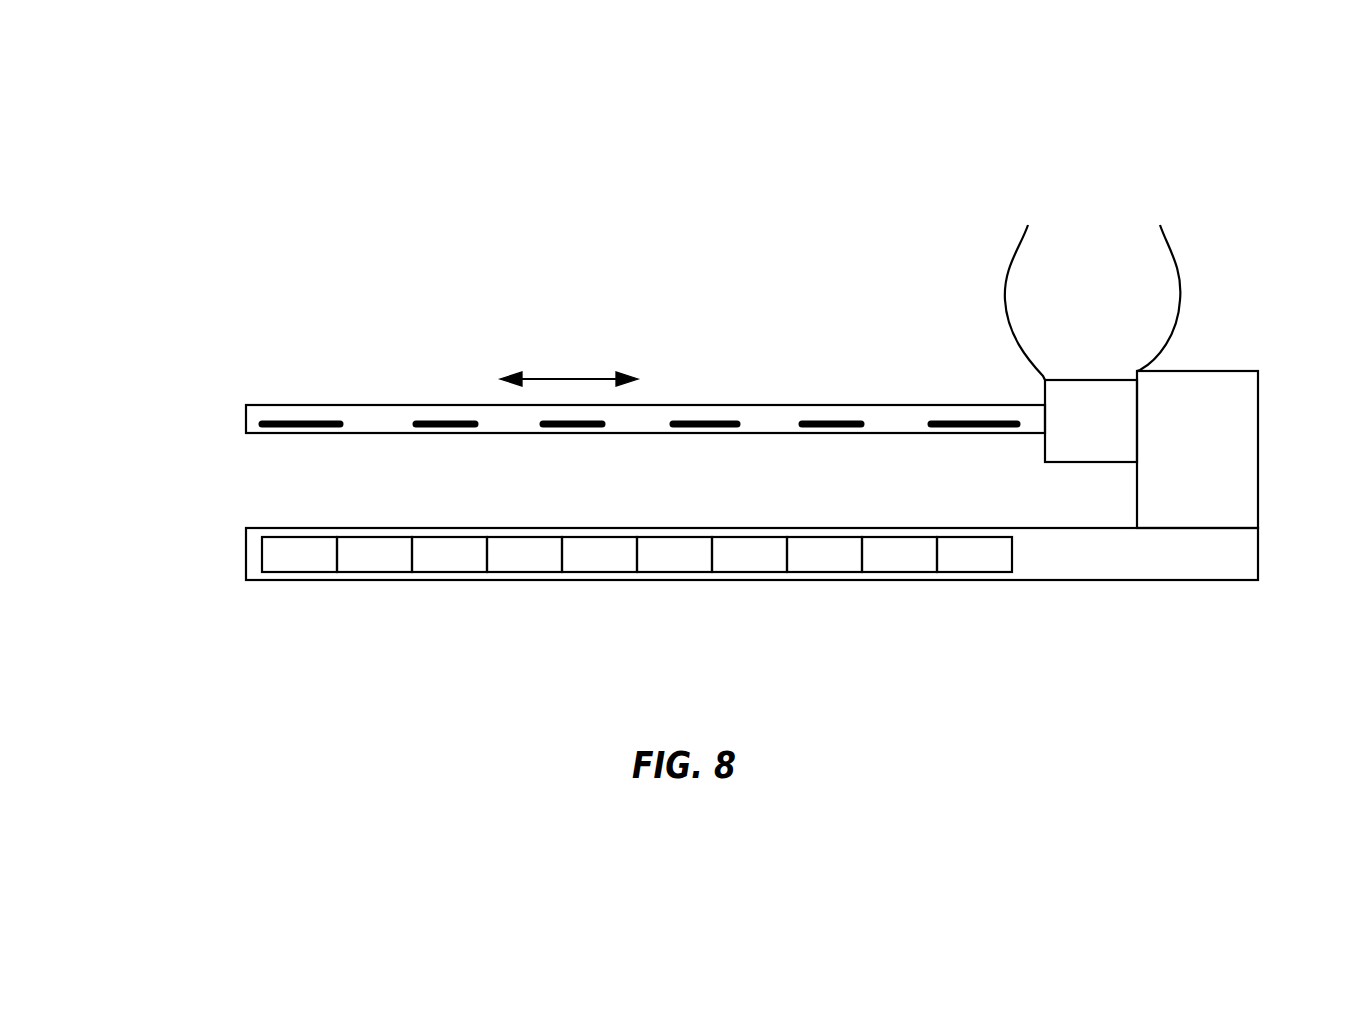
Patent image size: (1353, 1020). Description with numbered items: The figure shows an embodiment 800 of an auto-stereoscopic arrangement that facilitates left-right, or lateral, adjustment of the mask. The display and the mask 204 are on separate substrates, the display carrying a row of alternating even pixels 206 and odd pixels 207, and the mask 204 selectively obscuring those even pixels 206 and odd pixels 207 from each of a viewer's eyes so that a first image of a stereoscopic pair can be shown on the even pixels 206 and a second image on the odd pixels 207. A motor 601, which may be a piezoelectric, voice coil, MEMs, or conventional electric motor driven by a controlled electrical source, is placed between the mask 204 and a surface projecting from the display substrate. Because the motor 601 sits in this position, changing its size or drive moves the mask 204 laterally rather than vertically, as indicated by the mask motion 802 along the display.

The left/right adjustment system 800 is at (238, 160).
The mask 204 is at (296, 405).
The mask motion 802 is at (612, 377).
The motor 601 is at (1066, 380).
The even pixels 206 is at (599, 582).
The odd pixels 207 is at (674, 582).